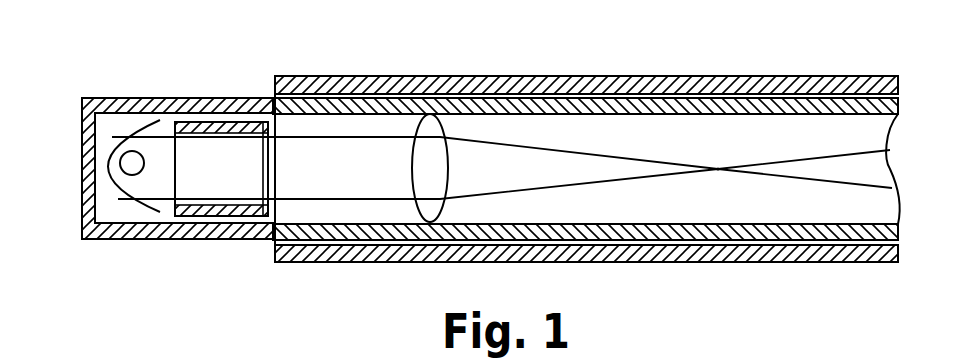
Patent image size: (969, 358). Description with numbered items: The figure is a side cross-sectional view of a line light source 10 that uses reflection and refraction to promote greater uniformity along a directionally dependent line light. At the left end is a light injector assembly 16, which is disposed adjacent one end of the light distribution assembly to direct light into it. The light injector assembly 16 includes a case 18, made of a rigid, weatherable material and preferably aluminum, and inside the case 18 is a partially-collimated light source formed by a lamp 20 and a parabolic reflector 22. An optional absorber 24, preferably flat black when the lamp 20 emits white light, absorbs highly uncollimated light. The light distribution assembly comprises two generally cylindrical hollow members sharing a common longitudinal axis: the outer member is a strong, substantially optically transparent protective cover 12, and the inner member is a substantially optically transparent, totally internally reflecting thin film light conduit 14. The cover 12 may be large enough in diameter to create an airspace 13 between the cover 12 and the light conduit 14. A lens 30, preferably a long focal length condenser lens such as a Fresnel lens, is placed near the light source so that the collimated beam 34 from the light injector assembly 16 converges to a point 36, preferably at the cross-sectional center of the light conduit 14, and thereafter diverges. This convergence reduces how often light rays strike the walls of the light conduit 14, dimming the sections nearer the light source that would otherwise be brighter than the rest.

The line light source 10 is at (153, 72).
The protective cover 12 is at (372, 264).
The airspace 13 is at (723, 241).
The light conduit 14 is at (345, 241).
The light injector assembly 16 is at (110, 242).
The case 18 is at (82, 196).
The lamp 20 is at (122, 156).
The parabolic reflector 22 is at (136, 128).
The absorber 24 is at (228, 128).
The lens 30 is at (452, 146).
The collimated beam 34 is at (338, 136).
The point 36 is at (719, 166).